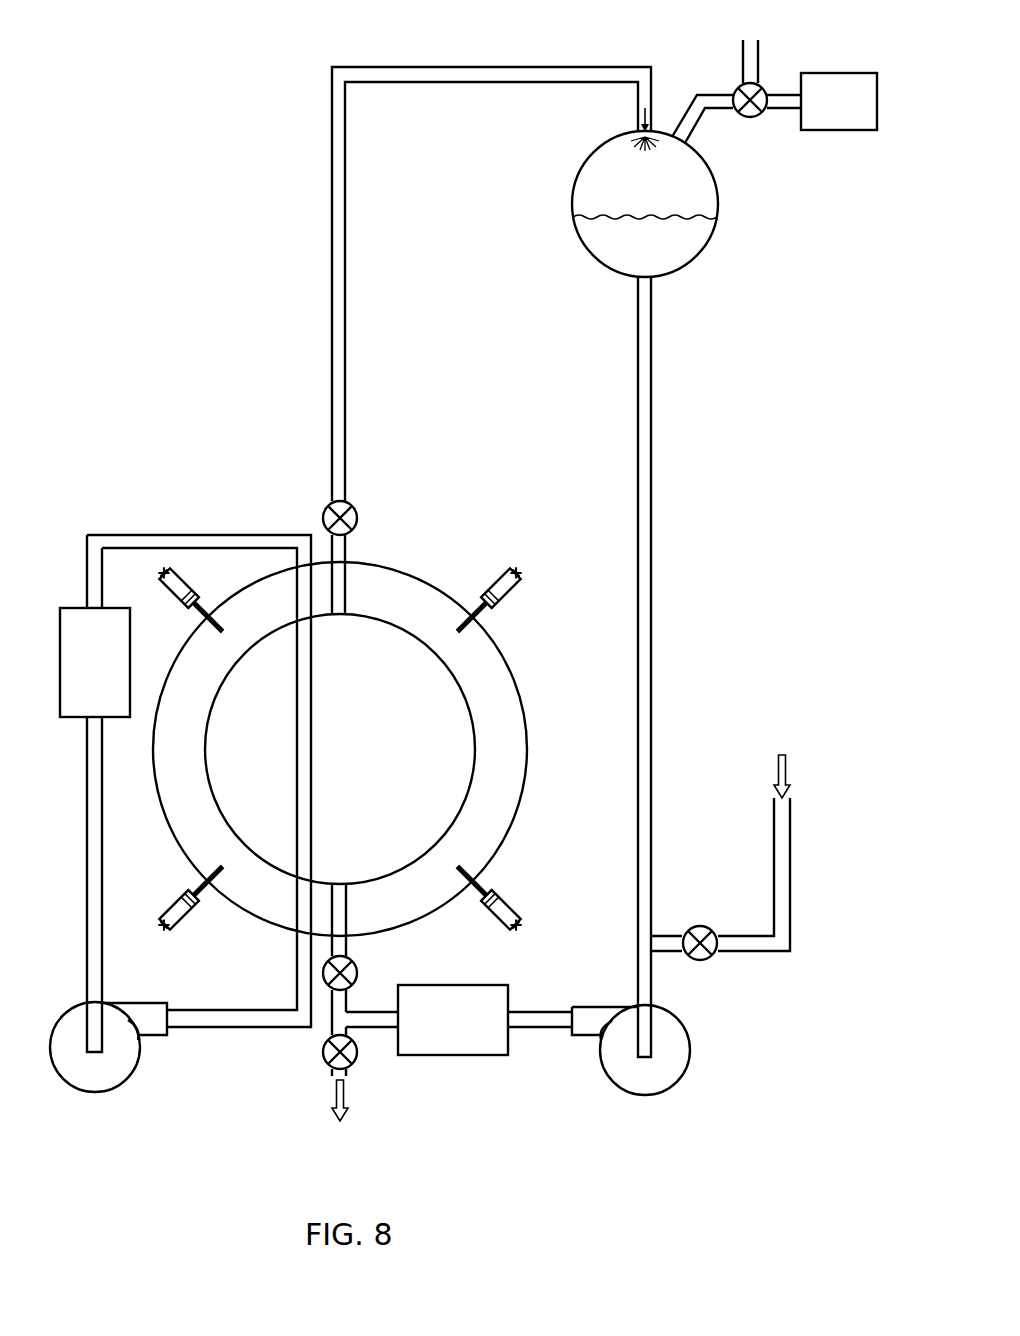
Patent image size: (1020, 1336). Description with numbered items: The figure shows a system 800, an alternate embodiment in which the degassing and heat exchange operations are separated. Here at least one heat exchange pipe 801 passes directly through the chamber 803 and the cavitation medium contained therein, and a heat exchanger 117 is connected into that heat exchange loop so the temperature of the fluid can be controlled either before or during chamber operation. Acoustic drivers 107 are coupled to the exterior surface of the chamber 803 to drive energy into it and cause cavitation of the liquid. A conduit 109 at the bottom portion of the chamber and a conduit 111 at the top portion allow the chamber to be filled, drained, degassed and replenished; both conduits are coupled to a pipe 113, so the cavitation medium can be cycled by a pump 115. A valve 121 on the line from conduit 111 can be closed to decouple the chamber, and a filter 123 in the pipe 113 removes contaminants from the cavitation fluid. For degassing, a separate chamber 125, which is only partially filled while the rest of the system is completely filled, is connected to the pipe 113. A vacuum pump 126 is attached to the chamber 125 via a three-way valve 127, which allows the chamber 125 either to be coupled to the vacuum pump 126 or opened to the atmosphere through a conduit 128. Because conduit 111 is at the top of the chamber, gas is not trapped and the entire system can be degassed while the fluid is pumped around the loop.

The acoustic drivers 107 is at (517, 626).
The conduit 109 is at (348, 903).
The conduit 111 is at (347, 593).
The pipe 113 is at (347, 180).
The pump 115 is at (680, 1082).
The heat exchanger 117 is at (95, 662).
The valve 121 is at (358, 518).
The filter 123 is at (459, 1020).
The degassing chamber 125 is at (554, 241).
The vacuum pump 126 is at (839, 101).
The three-way valve 127 is at (758, 118).
The conduit 128 is at (753, 27).
The system 800 is at (230, 355).
The heat exchange pipe 801 is at (180, 776).
The chamber 803 is at (534, 678).